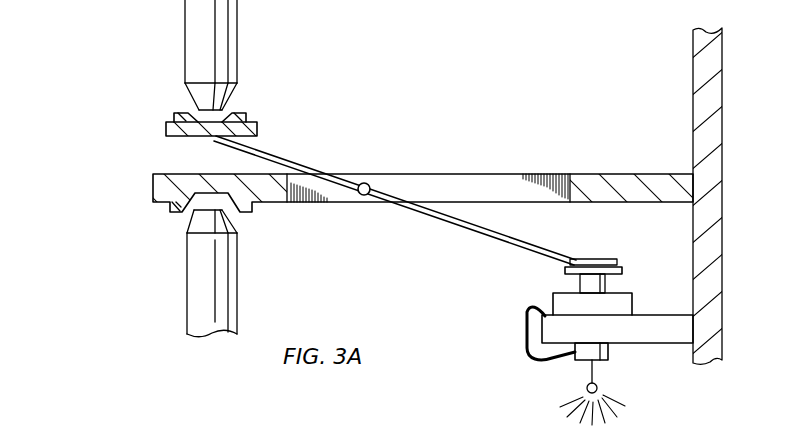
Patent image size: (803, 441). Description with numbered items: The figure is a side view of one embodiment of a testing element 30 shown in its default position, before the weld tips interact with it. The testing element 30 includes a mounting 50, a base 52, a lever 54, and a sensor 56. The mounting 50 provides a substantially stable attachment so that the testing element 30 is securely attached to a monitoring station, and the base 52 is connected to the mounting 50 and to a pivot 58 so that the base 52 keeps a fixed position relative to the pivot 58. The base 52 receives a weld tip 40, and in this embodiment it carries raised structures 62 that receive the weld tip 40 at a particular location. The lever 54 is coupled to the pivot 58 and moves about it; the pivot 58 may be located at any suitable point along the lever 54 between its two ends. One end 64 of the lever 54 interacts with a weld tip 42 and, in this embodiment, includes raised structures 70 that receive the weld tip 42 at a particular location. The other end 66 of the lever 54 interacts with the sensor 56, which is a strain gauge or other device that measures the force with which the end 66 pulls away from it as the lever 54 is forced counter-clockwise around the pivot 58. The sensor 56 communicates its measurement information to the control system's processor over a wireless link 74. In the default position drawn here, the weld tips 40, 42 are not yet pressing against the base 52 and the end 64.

The testing element 30 is at (95, 232).
The weld tip 40 is at (187, 292).
The weld tip 42 is at (185, 36).
The mounting 50 is at (723, 156).
The base 52 is at (153, 190).
The lever 54 is at (455, 224).
The sensor 56 is at (606, 288).
The pivot 58 is at (364, 196).
The raised structures 62 is at (177, 212).
The end 64 is at (166, 128).
The end 66 is at (617, 259).
The raised structures 70 is at (237, 112).
The wireless link 74 is at (609, 352).